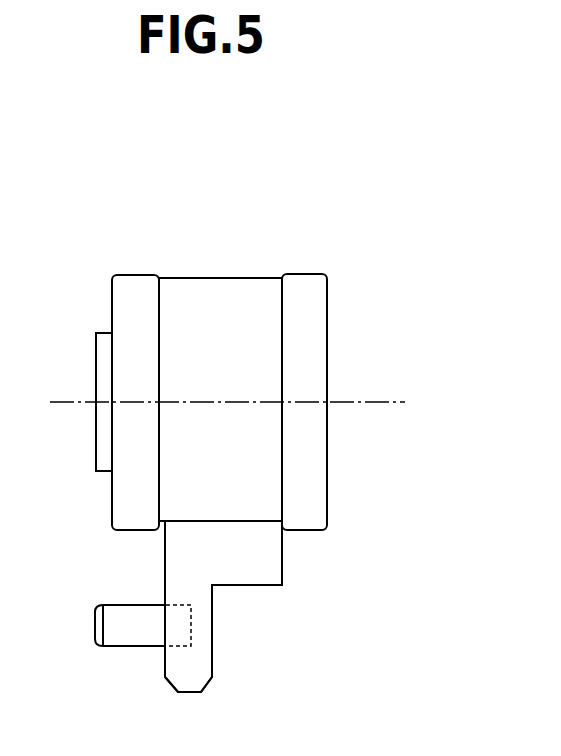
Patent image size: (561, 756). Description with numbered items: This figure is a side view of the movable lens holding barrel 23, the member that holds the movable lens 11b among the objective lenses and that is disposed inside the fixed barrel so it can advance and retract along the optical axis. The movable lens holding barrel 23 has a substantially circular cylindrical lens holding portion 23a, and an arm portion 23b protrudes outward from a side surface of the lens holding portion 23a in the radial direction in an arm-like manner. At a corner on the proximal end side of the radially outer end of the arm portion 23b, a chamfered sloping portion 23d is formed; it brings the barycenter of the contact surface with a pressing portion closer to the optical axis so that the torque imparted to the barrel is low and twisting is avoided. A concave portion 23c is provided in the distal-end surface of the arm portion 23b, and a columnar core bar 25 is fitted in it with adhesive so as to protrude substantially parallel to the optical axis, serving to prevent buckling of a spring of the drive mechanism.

The movable lens holding barrel 23 is at (222, 277).
The lens holding portion 23a is at (140, 273).
The arm portion 23b is at (184, 680).
The concave portion 23c is at (175, 613).
The sloping portion 23d is at (210, 680).
The movable lens 11b is at (96, 445).
The core bar 25 is at (95, 628).